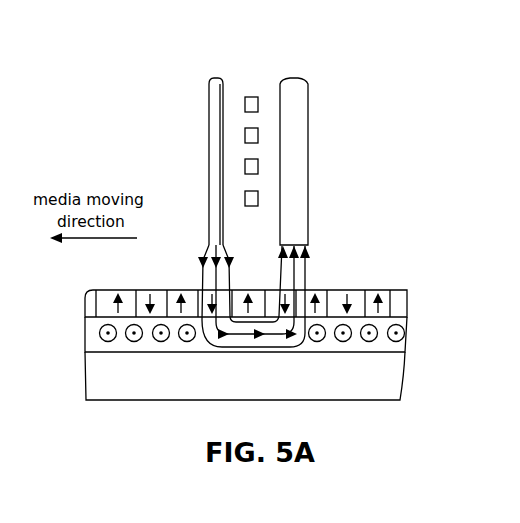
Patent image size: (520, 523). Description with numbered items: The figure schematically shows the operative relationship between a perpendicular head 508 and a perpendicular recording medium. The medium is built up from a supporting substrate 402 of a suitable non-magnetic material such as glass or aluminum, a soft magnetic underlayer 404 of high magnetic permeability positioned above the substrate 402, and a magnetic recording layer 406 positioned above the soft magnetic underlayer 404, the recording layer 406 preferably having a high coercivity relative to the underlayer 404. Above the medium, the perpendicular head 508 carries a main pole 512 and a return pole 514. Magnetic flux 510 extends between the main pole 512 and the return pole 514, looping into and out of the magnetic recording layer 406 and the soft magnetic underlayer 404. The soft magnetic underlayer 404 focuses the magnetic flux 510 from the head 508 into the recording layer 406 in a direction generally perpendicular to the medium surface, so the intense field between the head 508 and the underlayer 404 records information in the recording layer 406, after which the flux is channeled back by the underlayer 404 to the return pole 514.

The perpendicular head 508 is at (224, 61).
The main pole 512 is at (212, 156).
The return pole 514 is at (305, 156).
The magnetic flux 510 is at (308, 275).
The magnetic recording layer 406 is at (400, 300).
The soft magnetic underlayer 404 is at (403, 323).
The supporting substrate 402 is at (168, 381).